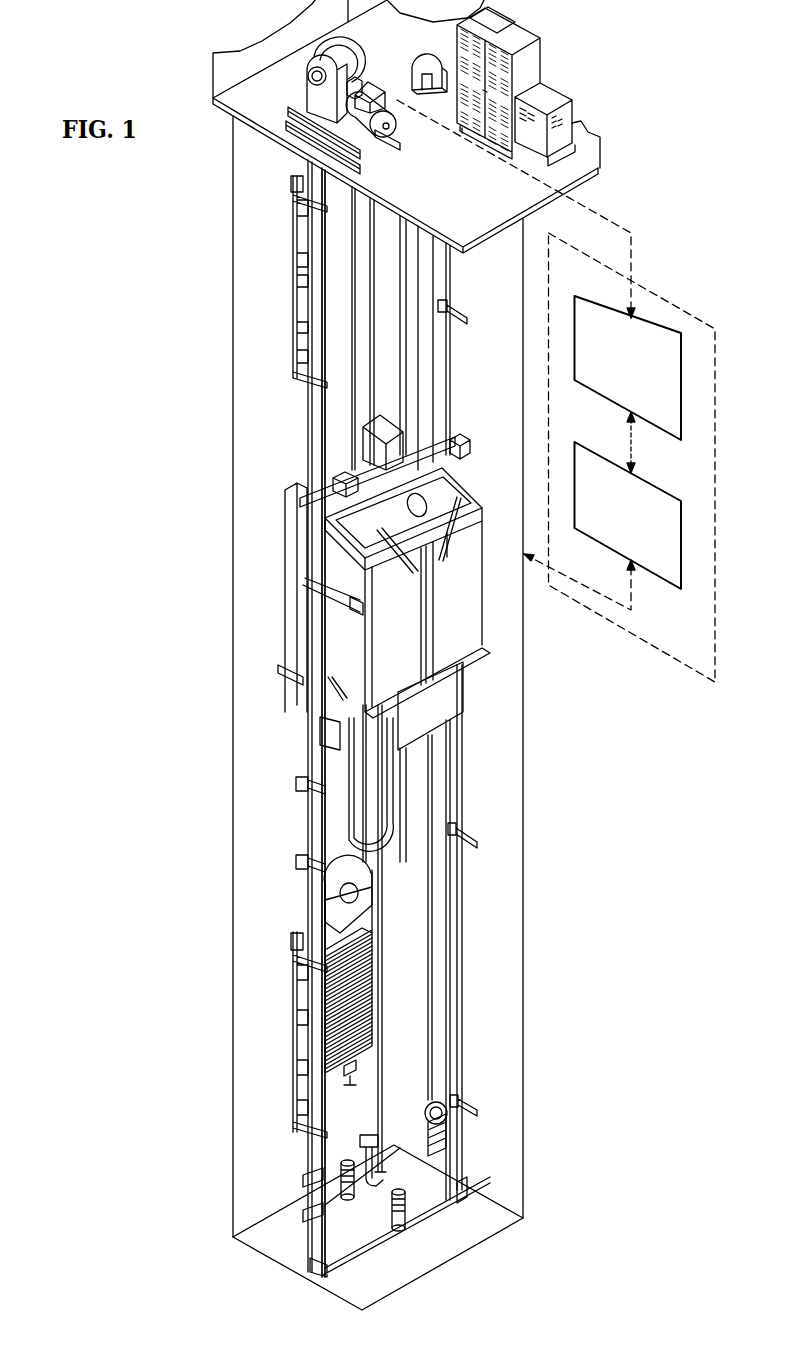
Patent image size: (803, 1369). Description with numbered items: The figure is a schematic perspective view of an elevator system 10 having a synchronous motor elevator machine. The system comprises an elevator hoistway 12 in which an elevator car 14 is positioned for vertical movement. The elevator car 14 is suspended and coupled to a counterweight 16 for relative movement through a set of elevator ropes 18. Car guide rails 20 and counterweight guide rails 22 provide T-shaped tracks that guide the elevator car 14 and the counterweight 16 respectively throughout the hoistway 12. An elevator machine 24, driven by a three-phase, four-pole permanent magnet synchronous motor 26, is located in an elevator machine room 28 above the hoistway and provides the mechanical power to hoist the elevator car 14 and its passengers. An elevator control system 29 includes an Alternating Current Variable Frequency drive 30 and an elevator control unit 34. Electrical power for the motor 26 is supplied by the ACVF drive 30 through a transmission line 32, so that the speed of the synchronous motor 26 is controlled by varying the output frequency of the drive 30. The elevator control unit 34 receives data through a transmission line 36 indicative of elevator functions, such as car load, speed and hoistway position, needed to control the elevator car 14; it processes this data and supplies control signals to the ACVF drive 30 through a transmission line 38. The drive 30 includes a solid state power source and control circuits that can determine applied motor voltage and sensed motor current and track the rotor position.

The elevator system 10 is at (108, 320).
The elevator hoistway 12 is at (232, 381).
The elevator car 14 is at (285, 585).
The counterweight 16 is at (338, 1040).
The elevator ropes 18 is at (372, 372).
The car guide rails 20 is at (460, 978).
The counterweight guide rails 22 is at (372, 1096).
The elevator machine 24 is at (313, 97).
The permanent magnet synchronous motor 26 is at (397, 100).
The elevator machine room 28 is at (290, 68).
The elevator control system 29 is at (695, 306).
The ACVF drive 30 is at (612, 308).
The transmission line 32 is at (594, 212).
The elevator control unit 34 is at (612, 458).
The transmission line 36 is at (585, 588).
The transmission line 38 is at (634, 444).